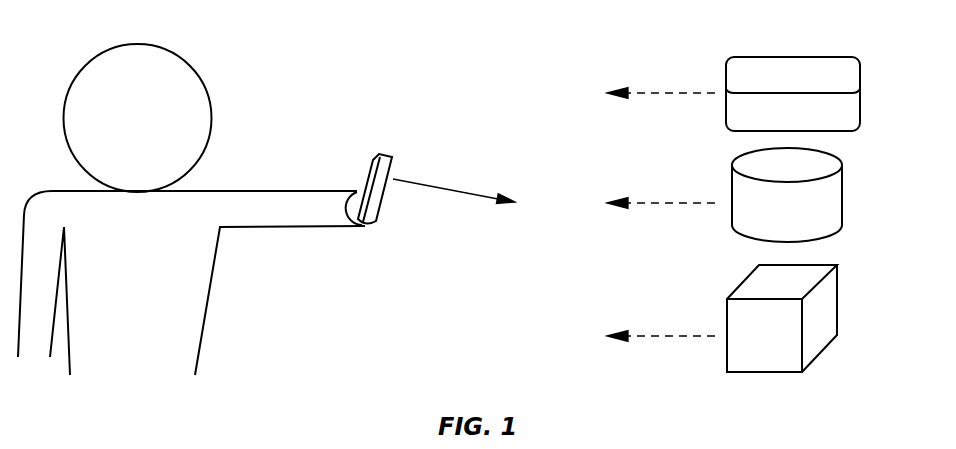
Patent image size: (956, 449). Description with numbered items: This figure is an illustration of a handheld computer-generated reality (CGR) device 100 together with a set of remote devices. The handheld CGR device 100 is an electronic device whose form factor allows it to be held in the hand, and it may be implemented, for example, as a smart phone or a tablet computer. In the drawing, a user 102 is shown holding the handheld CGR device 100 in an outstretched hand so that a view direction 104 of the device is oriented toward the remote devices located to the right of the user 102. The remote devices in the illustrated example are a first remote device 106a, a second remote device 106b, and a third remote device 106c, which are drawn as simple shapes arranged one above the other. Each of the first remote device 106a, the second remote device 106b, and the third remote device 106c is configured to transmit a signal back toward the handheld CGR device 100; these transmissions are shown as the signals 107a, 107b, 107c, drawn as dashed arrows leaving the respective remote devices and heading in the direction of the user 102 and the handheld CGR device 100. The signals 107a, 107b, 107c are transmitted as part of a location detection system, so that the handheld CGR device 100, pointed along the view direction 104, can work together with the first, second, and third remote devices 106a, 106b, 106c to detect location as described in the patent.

The handheld computer-generated reality device 100 is at (390, 156).
The user 102 is at (50, 83).
The view direction 104 is at (453, 211).
The first remote device 106a is at (861, 93).
The second remote device 106b is at (843, 184).
The third remote device 106c is at (838, 306).
The signal 107a is at (692, 85).
The signal 107b is at (692, 195).
The signal 107c is at (692, 326).